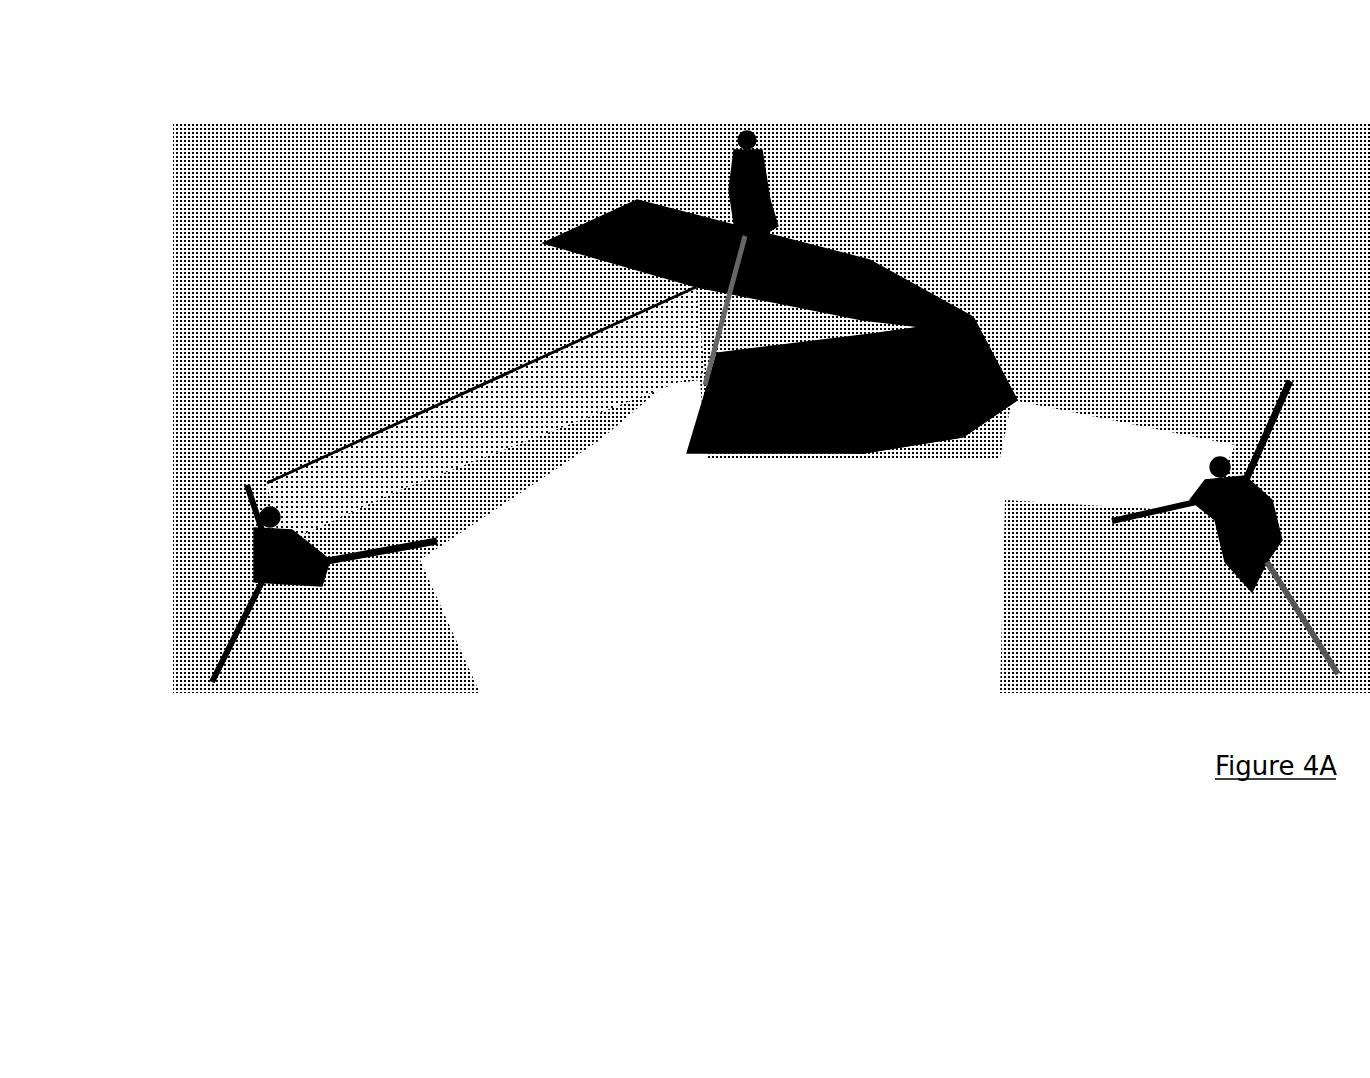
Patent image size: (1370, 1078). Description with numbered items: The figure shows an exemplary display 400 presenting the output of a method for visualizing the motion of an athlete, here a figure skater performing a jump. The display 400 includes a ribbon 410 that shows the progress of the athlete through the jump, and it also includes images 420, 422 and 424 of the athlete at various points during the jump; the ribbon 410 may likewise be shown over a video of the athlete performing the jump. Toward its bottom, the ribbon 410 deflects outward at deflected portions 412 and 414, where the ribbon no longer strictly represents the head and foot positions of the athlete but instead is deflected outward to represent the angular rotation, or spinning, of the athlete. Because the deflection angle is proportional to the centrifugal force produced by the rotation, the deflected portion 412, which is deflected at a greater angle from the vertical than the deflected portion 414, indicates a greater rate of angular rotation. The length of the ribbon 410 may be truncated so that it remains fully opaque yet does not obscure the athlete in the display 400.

The display 400 is at (330, 61).
The ribbon 410 is at (405, 455).
The deflected portion 412 is at (569, 195).
The deflected portion 414 is at (1012, 330).
The image of the athlete 420 is at (305, 617).
The image of the athlete 422 is at (752, 125).
The image of the athlete 424 is at (1244, 420).